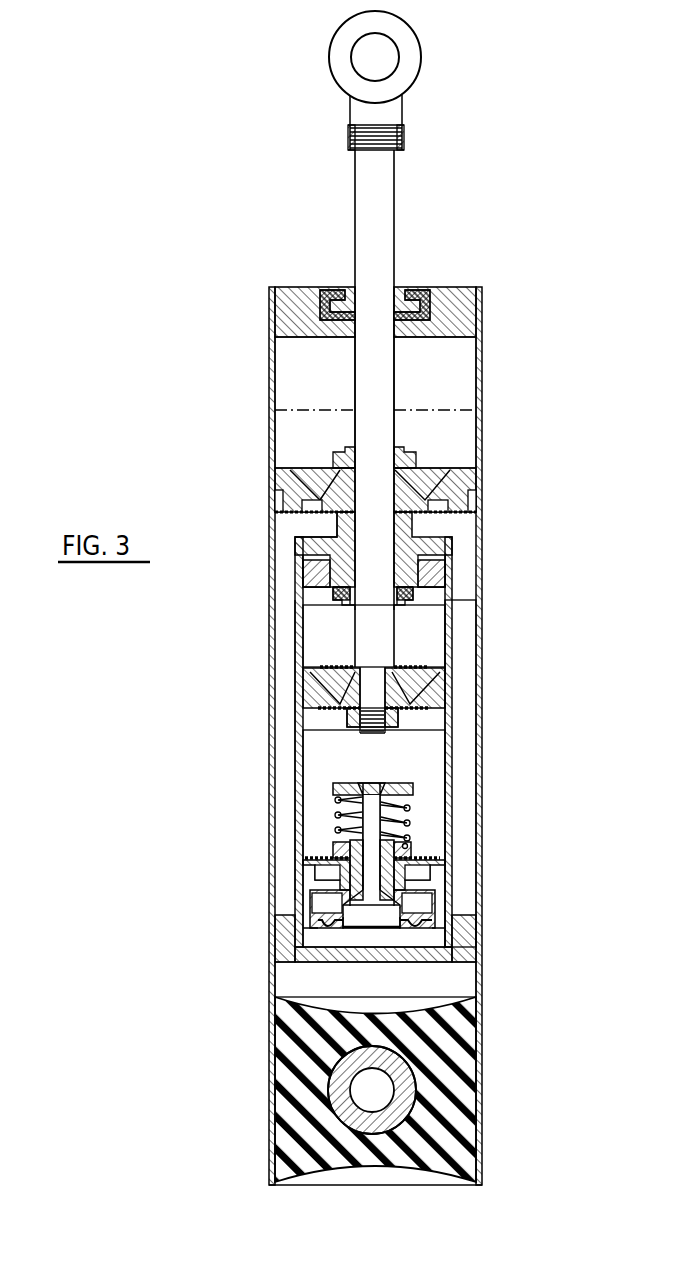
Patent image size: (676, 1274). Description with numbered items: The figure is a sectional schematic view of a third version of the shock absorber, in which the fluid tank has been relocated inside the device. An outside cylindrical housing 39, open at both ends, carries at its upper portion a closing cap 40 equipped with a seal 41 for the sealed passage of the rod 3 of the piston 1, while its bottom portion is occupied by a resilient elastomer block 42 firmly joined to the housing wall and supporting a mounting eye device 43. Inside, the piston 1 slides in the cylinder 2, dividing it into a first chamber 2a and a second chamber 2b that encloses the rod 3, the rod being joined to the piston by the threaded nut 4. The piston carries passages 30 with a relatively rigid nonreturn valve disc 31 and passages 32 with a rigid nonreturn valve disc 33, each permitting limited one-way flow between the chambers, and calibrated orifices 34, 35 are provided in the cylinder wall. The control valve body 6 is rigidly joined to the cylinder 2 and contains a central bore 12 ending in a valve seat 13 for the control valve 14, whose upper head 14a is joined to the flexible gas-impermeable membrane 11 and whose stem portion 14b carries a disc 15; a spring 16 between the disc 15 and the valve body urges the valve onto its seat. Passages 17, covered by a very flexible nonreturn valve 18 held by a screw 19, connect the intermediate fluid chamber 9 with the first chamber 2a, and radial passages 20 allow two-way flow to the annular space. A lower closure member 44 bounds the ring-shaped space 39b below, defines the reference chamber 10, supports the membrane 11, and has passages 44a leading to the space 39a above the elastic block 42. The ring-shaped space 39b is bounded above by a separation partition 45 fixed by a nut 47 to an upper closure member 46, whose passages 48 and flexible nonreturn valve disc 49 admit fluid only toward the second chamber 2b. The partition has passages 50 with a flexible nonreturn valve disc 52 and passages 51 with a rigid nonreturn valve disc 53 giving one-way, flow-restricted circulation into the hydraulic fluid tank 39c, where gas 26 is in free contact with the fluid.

The piston 1 is at (345, 685).
The cylinder 2 is at (298, 745).
The first chamber 2a is at (425, 745).
The second chamber 2b is at (330, 635).
The rod 3 is at (378, 208).
The threaded nut 4 is at (352, 722).
The control valve body 6 is at (308, 880).
The intermediate fluid chamber 9 is at (330, 912).
The reference chamber 10 is at (455, 937).
The flexible gas-impermeable membrane 11 is at (330, 932).
The central bore 12 is at (320, 858).
The valve seat 13 is at (445, 898).
The control valve 14 is at (372, 905).
The upper head 14a is at (390, 928).
The stem portion 14b is at (373, 790).
The disc 15 is at (405, 790).
The spring 16 is at (340, 800).
The passages 17 is at (440, 876).
The flexible nonreturn valve 18 is at (420, 855).
The screw 19 is at (320, 845).
The radial passages 20 is at (312, 891).
The gas 26 is at (320, 378).
The passages 30 is at (435, 682).
The nonreturn valve disc 31 is at (400, 716).
The passages 32 is at (300, 690).
The nonreturn valve disc 33 is at (420, 668).
The calibrated orifice 34 is at (460, 826).
The calibrated orifice 35 is at (446, 612).
The outside cylindrical housing 39 is at (480, 378).
The space 39a is at (300, 978).
The ring-shaped space 39b is at (300, 726).
The hydraulic fluid tank 39c is at (298, 443).
The closing cap 40 is at (455, 316).
The seal 41 is at (336, 290).
The resilient elastomer block 42 is at (310, 1093).
The mounting eye device 43 is at (400, 1082).
The lower closure member 44 is at (285, 951).
The passages 44a is at (466, 945).
The separation partition 45 is at (300, 490).
The upper closure member 46 is at (330, 545).
The nut 47 is at (340, 466).
The passages 48 is at (440, 555).
The flexible nonreturn valve disc 49 is at (410, 595).
The passages 50 is at (462, 491).
The passages 51 is at (445, 480).
The flexible nonreturn valve disc 52 is at (462, 503).
The rigid nonreturn valve disc 53 is at (418, 470).